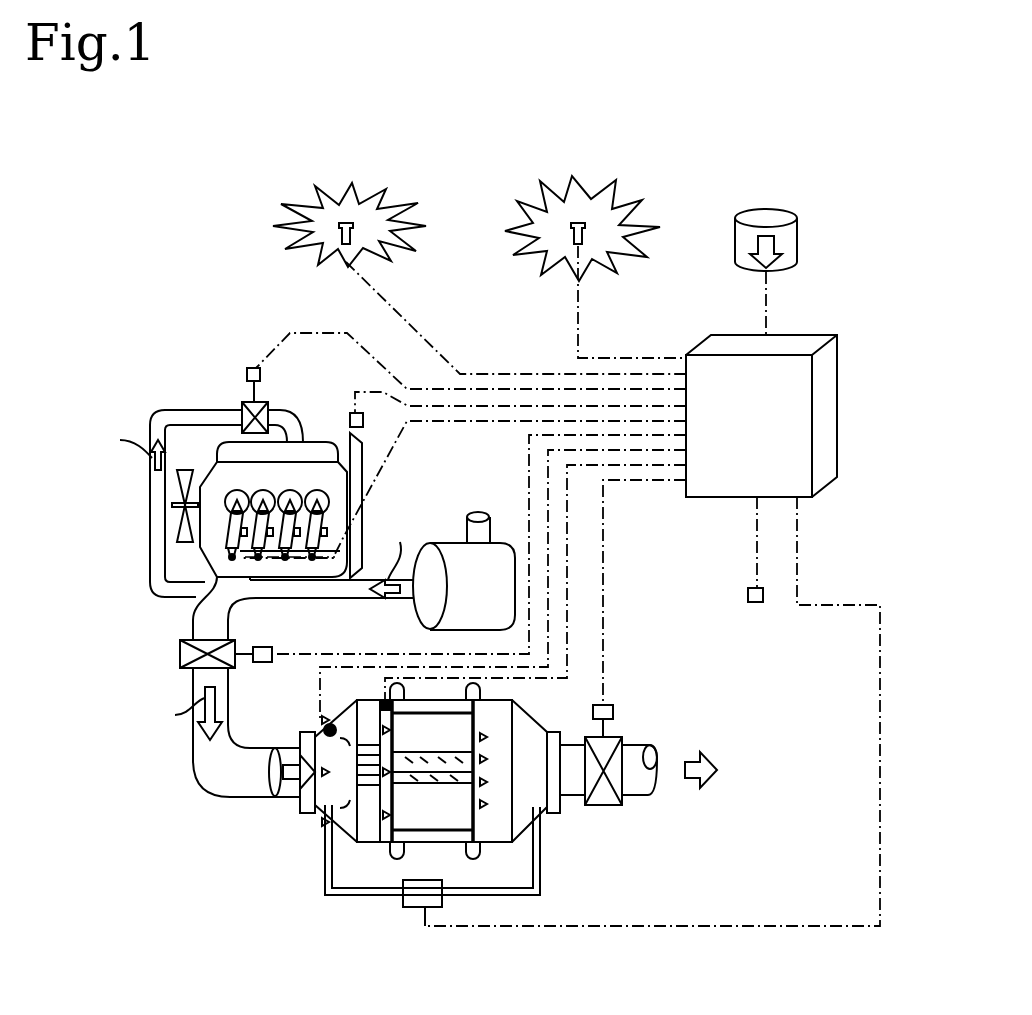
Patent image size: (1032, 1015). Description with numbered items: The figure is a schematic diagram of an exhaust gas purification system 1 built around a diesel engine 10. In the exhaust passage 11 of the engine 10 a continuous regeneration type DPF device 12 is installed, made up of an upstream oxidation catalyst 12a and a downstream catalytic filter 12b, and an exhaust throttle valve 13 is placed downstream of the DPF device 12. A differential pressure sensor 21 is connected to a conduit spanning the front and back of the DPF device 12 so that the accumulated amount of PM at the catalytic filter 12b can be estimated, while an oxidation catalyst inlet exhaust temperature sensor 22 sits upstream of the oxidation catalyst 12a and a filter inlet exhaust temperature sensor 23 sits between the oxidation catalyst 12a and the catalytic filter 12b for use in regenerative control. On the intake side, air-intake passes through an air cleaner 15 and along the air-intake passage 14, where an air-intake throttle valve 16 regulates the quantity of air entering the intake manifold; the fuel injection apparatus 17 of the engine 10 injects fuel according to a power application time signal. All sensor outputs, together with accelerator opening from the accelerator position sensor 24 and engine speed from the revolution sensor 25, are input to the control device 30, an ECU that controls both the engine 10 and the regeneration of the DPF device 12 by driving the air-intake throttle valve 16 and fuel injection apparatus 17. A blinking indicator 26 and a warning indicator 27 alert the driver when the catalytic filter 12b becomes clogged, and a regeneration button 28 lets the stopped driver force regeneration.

The exhaust gas purification system 1 is at (701, 228).
The diesel engine 10 is at (217, 465).
The exhaust passage 11 is at (222, 783).
The continuous regeneration type DPF device 12 is at (450, 840).
The oxidation catalyst 12a is at (370, 815).
The catalytic filter 12b is at (440, 812).
The exhaust throttle valve 13 is at (613, 742).
The air-intake passage 14 is at (150, 500).
The air cleaner 15 is at (455, 560).
The air-intake throttle valve 16 is at (254, 368).
The fuel injection apparatus 17 is at (237, 527).
The differential pressure sensor 21 is at (415, 893).
The oxidation catalyst inlet exhaust temperature sensor 22 is at (330, 728).
The filter inlet exhaust temperature sensor 23 is at (385, 703).
The accelerator position sensor 24 is at (757, 603).
The revolution sensor 25 is at (352, 412).
The blinking indicator 26 is at (346, 222).
The warning indicator 27 is at (578, 216).
The regeneration button 28 is at (783, 213).
The control device 30 is at (830, 415).